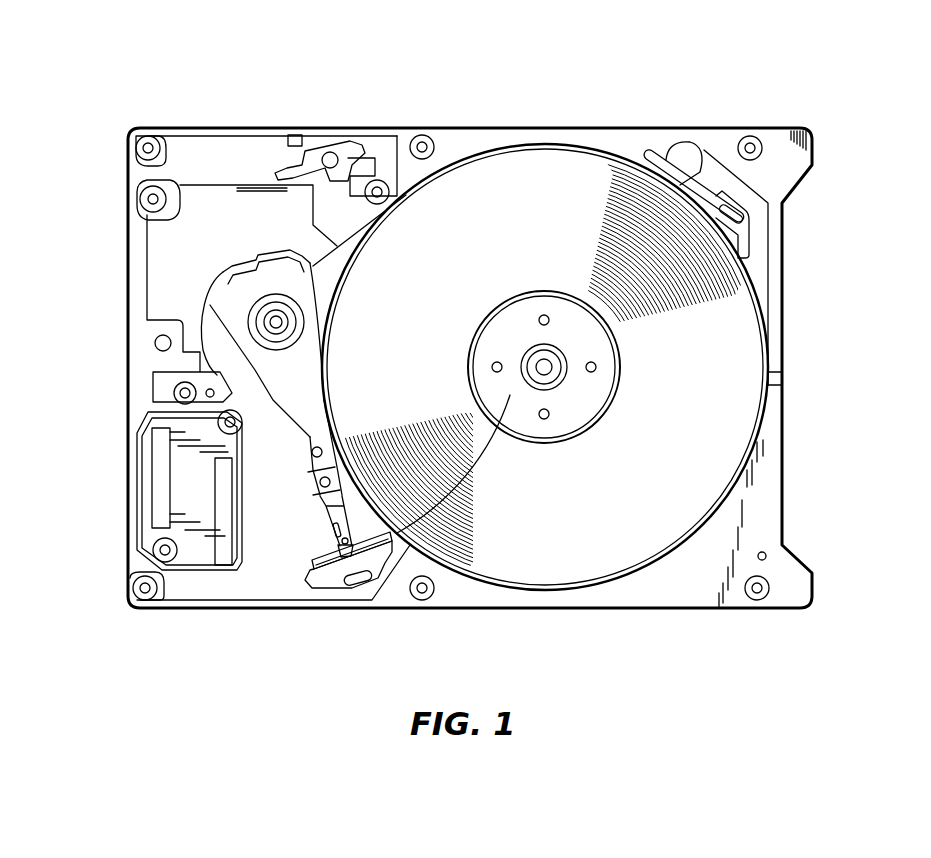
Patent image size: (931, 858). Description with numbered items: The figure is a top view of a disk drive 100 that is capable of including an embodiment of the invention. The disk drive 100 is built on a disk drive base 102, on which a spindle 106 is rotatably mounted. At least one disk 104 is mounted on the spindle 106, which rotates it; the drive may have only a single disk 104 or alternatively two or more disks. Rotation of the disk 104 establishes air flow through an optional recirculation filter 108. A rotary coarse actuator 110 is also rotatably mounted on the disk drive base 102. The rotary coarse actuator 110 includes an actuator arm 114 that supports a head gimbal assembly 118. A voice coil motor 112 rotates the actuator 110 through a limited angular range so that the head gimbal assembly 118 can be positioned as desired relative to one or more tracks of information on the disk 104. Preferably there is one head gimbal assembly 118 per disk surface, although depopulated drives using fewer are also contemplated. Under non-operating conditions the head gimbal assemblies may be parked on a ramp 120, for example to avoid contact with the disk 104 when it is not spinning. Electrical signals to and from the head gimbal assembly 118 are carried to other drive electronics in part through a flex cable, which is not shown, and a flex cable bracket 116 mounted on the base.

The disk drive 100 is at (238, 82).
The disk drive base 102 is at (772, 484).
The disk 104 is at (545, 238).
The spindle 106 is at (588, 400).
The recirculation filter 108 is at (685, 183).
The rotary coarse actuator 110 is at (300, 285).
The voice coil motor 112 is at (165, 258).
The actuator arm 114 is at (312, 437).
The flex cable bracket 116 is at (192, 495).
The head gimbal assembly 118 is at (333, 523).
The ramp 120 is at (332, 580).